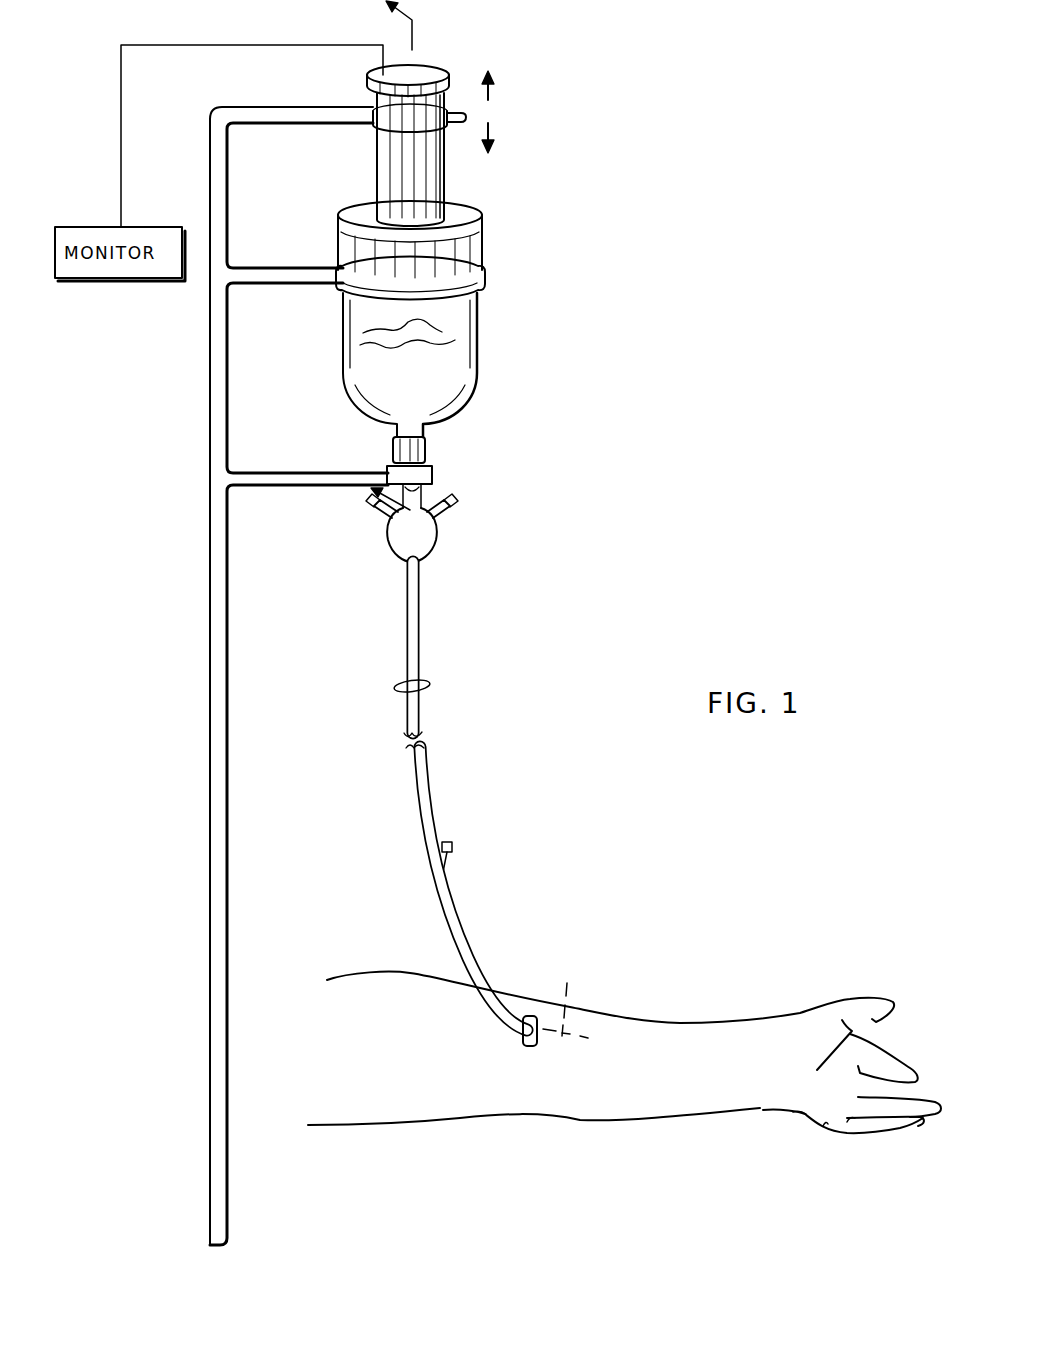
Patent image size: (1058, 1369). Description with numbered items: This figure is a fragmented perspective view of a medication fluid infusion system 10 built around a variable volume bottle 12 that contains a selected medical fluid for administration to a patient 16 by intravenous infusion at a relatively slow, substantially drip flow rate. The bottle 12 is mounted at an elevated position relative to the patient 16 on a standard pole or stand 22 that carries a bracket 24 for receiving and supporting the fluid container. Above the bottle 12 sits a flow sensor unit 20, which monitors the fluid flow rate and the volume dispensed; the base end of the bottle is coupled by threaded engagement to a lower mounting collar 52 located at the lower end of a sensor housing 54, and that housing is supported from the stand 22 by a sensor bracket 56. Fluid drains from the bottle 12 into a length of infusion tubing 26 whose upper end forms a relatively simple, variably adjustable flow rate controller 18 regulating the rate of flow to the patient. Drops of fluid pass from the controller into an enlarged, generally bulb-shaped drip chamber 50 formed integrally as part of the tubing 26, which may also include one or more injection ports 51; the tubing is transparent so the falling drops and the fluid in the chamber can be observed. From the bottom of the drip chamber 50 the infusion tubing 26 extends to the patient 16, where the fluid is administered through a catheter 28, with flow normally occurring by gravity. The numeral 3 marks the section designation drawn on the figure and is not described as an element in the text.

The section line for FIG. 3 is at (452, 481).
The medication fluid infusion system 10 is at (580, 404).
The variable volume bottle 12 is at (458, 325).
The patient 16 is at (709, 1033).
The adjustable flow rate controller 18 is at (428, 443).
The flow sensor unit 20 is at (427, 145).
The pole or stand 22 is at (211, 600).
The bracket 24 is at (262, 276).
The infusion tubing 26 is at (429, 783).
The catheter 28 is at (575, 992).
The drip chamber 50 is at (393, 551).
The injection ports 51 is at (455, 512).
The lower mounting collar 52 is at (349, 215).
The sensor housing 54 is at (382, 159).
The sensor bracket 56 is at (333, 80).